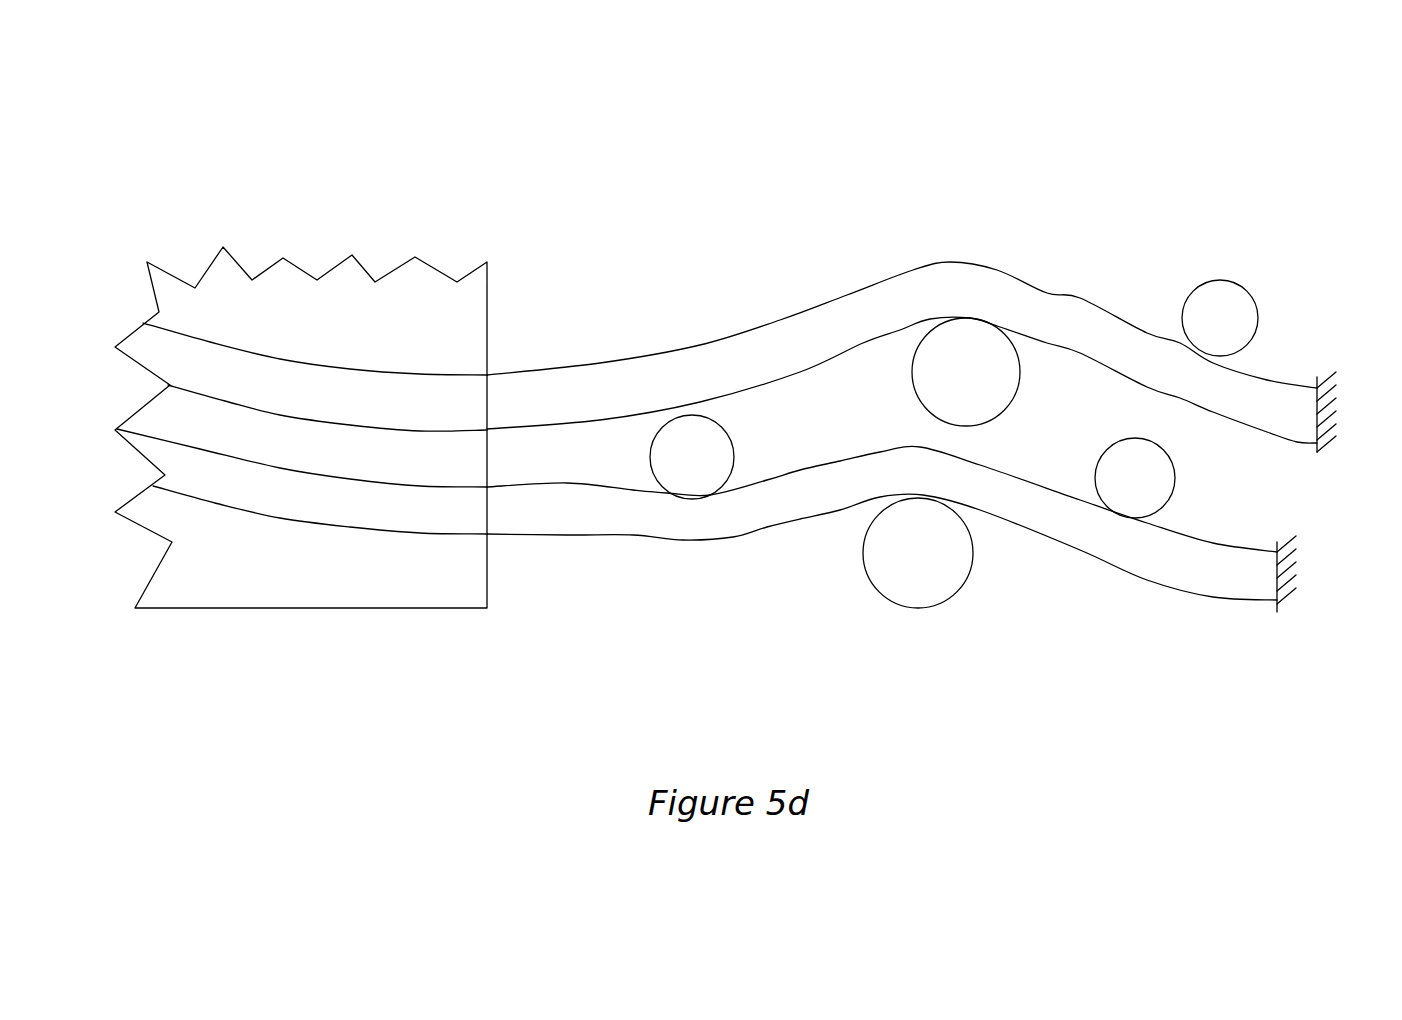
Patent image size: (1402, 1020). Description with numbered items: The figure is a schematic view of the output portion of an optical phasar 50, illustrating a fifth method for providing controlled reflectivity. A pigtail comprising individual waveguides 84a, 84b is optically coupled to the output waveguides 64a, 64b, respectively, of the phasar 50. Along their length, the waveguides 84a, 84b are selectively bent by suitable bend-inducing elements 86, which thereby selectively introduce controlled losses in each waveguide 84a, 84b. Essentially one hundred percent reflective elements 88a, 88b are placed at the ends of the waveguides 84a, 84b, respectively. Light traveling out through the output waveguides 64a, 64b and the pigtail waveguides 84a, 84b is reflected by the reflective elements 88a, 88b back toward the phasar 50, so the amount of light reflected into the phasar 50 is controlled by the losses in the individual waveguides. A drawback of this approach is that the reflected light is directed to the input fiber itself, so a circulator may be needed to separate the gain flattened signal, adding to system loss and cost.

The phasar 50 is at (165, 188).
The output waveguide 64a is at (403, 392).
The output waveguide 64b is at (397, 507).
The waveguide 84a is at (695, 362).
The waveguide 84b is at (773, 505).
The bend-inducing element 86 is at (983, 337).
The reflective element 88a is at (1350, 398).
The reflective element 88b is at (1302, 562).